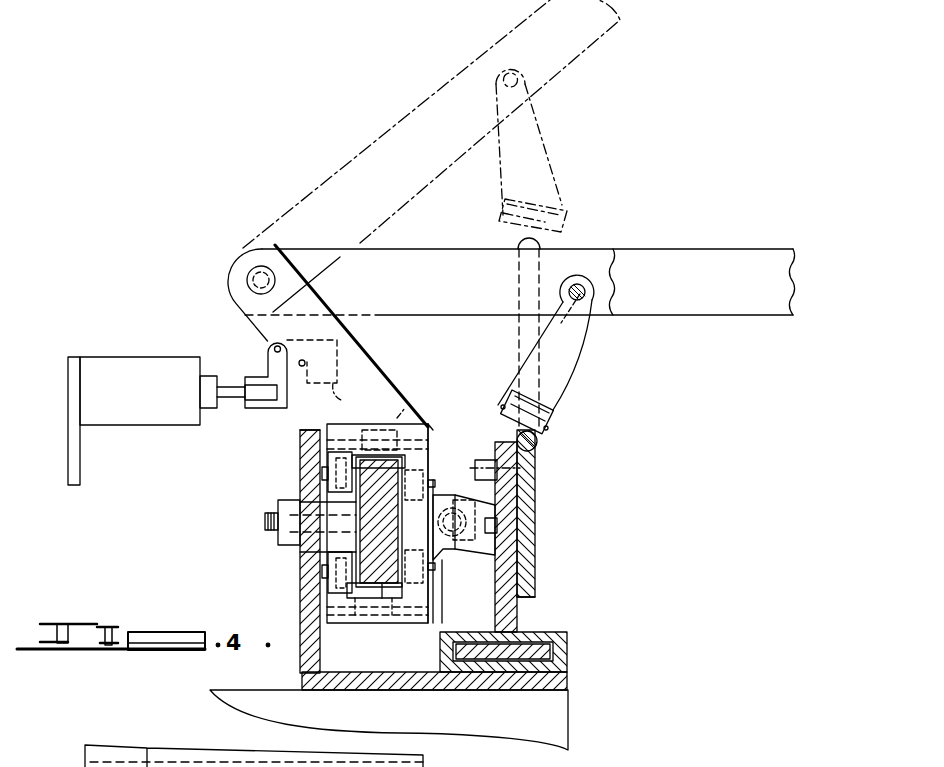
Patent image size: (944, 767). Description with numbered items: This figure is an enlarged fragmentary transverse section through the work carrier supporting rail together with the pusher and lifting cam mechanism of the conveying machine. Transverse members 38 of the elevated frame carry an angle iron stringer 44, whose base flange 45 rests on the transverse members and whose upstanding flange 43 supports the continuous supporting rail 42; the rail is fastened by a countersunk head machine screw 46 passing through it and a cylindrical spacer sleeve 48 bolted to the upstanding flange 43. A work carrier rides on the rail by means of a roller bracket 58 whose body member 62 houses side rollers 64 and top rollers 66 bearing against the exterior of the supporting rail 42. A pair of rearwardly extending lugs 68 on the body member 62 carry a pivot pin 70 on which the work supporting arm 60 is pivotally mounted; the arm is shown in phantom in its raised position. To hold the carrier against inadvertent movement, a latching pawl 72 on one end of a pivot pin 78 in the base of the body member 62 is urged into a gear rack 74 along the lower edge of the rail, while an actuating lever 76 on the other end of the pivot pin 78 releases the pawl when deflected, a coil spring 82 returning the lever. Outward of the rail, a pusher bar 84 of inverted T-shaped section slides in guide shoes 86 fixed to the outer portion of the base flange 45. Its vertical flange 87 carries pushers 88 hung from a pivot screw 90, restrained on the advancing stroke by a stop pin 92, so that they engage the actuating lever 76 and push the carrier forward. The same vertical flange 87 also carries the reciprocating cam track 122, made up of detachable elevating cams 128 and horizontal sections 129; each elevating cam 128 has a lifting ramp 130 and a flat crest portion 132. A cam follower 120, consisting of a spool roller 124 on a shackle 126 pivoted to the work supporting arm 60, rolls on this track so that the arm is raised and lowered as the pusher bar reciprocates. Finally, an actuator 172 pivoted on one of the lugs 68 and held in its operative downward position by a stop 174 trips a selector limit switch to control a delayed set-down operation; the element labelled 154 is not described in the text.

The transverse members 38 is at (548, 717).
The supporting rail 42 is at (402, 468).
The upstanding flange 43 is at (302, 446).
The angle iron stringer 44 is at (303, 576).
The base flange 45 is at (420, 682).
The countersunk head machine screw 46 is at (263, 521).
The cylindrical spacer sleeve 48 is at (327, 535).
The roller bracket 58 is at (433, 431).
The work supporting arm 60 is at (378, 131).
The body member 62 is at (330, 430).
The side rollers 64 is at (323, 473).
The top rollers 66 is at (405, 408).
The rearwardly extending lugs 68 is at (377, 372).
The pivot pin 70 is at (247, 279).
The latching pawl 72 is at (355, 592).
The gear rack 74 is at (340, 595).
The actuating lever 76 is at (443, 580).
The pivot pin 78 is at (390, 627).
The coil spring 82 is at (457, 560).
The pusher bar 84 is at (565, 645).
The guide shoes 86 is at (556, 632).
The vertical flange 87 is at (527, 592).
The pushers 88 is at (512, 505).
The pivot screw 90 is at (500, 468).
The stop pin 92 is at (498, 525).
The cam follower 120 is at (538, 160).
The reciprocating cam track 122 is at (535, 546).
The spool roller 124 is at (540, 196).
The shackle 126 is at (555, 347).
The elevating cam 128 is at (580, 247).
The horizontal sections 129 is at (548, 448).
The lifting ramp 130 is at (430, 760).
The flat crest portion 132 is at (548, 229).
The cylinder 154 is at (92, 362).
The actuator 172 is at (268, 358).
The stop 174 is at (307, 362).